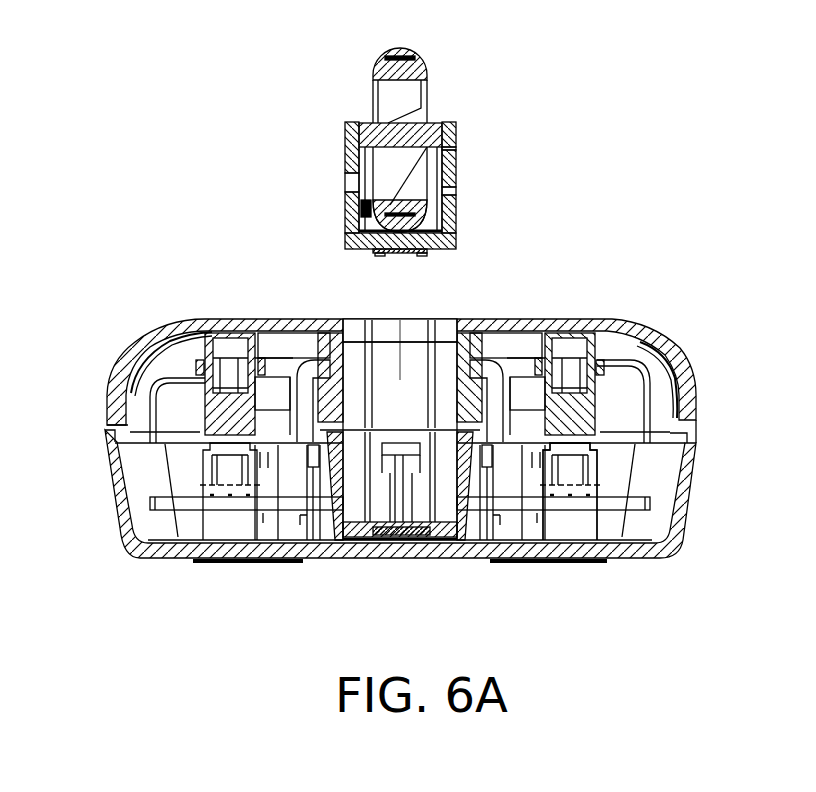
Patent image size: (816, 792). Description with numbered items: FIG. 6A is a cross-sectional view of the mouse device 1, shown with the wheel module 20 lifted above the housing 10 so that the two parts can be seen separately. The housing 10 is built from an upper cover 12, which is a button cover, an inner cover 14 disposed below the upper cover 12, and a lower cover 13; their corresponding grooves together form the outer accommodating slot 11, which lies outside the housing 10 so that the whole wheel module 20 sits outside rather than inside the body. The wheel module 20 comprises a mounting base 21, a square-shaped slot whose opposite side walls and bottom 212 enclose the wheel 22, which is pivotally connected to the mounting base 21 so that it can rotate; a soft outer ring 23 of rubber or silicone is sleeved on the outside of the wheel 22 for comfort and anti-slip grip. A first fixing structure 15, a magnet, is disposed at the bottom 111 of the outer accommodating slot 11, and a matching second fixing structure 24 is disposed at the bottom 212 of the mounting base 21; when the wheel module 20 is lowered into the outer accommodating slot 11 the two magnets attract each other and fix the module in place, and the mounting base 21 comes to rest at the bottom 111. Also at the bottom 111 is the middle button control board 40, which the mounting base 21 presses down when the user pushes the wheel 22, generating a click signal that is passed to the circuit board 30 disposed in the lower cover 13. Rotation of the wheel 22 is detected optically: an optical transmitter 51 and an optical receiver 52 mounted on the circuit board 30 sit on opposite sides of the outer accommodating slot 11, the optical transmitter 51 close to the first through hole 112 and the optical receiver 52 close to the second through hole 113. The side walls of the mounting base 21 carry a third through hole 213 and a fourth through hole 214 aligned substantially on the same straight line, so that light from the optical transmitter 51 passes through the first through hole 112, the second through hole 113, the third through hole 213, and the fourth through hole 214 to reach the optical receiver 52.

The mouse device 1 is at (98, 123).
The housing 10 is at (146, 342).
The outer accommodating slot 11 is at (360, 335).
The bottom of the outer accommodating slot 111 is at (357, 540).
The first through hole 112 is at (487, 468).
The second through hole 113 is at (333, 462).
The upper cover 12 is at (202, 323).
The lower cover 13 is at (122, 487).
The inner cover 14 is at (143, 398).
The first fixing structure 15 is at (392, 538).
The wheel module 20 is at (325, 70).
The mounting base 21 is at (457, 160).
The bottom of the mounting base 212 is at (453, 230).
The third through hole 213 is at (453, 192).
The fourth through hole 214 is at (347, 182).
The wheel 22 is at (410, 73).
The outer ring 23 is at (407, 48).
The second fixing structure 24 is at (402, 253).
The circuit board 30 is at (226, 509).
The middle button control board 40 is at (430, 538).
The optical transmitter 51 is at (492, 460).
The optical receiver 52 is at (310, 468).